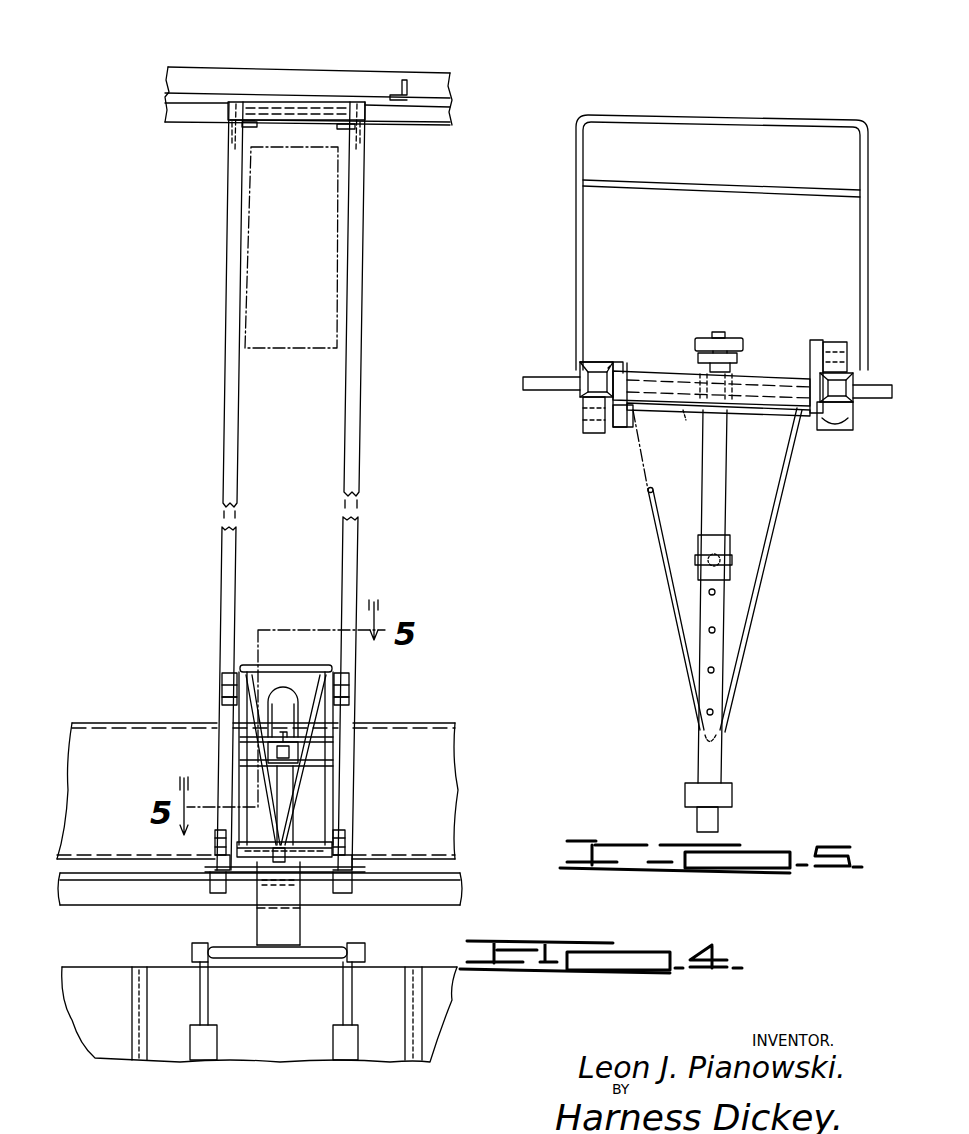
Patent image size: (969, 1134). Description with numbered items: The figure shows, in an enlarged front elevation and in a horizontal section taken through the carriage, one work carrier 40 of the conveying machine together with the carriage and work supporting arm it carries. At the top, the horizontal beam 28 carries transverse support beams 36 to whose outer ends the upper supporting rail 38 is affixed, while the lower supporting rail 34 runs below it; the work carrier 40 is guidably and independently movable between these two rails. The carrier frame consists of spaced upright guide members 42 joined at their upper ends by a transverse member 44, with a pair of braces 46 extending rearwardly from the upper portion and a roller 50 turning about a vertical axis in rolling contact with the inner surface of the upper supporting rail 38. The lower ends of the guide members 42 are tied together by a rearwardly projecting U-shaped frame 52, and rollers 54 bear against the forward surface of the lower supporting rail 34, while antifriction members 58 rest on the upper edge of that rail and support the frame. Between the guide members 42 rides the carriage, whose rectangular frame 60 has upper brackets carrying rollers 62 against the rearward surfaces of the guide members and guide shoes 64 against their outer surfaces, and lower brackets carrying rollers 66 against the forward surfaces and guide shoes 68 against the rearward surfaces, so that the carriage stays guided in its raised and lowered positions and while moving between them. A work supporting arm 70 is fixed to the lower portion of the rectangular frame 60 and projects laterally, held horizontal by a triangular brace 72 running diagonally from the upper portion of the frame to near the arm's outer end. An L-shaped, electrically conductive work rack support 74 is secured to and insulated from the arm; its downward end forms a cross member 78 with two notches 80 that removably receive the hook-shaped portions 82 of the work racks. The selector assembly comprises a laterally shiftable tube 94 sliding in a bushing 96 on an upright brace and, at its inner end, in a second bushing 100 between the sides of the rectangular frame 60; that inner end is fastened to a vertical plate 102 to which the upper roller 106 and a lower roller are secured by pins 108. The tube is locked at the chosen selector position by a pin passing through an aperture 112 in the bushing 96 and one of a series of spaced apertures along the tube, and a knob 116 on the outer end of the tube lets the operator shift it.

In FIG. 4, the horizontal beam 28 is at (330, 78).
In FIG. 4, the lower supporting rail 34 is at (462, 892).
In FIG. 5, the lower supporting rail 34 is at (557, 352).
In FIG. 4, the transverse support beams 36 is at (408, 90).
In FIG. 4, the upper supporting rail 38 is at (448, 122).
In FIG. 4, the work carrier 40 is at (375, 452).
In FIG. 4, the guide members 42 is at (237, 441).
In FIG. 5, the guide members 42 is at (593, 362).
In FIG. 4, the transverse member 44 is at (287, 118).
In FIG. 4, the braces 46 is at (228, 148).
In FIG. 4, the roller 50 is at (228, 128).
In FIG. 5, the U-shaped frame 52 is at (690, 118).
In FIG. 4, the rollers 54 is at (207, 883).
In FIG. 4, the antifriction members 58 is at (367, 870).
In FIG. 4, the rectangular frame 60 is at (292, 660).
In FIG. 5, the rectangular frame 60 is at (665, 361).
In FIG. 4, the rollers 62 is at (217, 677).
In FIG. 5, the rollers 62 is at (840, 340).
In FIG. 4, the guide shoe 64 is at (227, 687).
In FIG. 5, the guide shoe 64 is at (835, 437).
In FIG. 4, the rollers 66 is at (213, 845).
In FIG. 5, the rollers 66 is at (590, 434).
In FIG. 4, the guide shoes 68 is at (348, 842).
In FIG. 5, the guide shoes 68 is at (620, 366).
In FIG. 4, the work supporting arm 70 is at (290, 850).
In FIG. 5, the work supporting arm 70 is at (712, 822).
In FIG. 4, the triangular brace 72 is at (303, 792).
In FIG. 5, the triangular brace 72 is at (757, 607).
In FIG. 4, the work rack support 74 is at (257, 920).
In FIG. 4, the cross member 78 is at (304, 948).
In FIG. 4, the notches 80 is at (195, 940).
In FIG. 4, the hook-shaped portions 82 is at (333, 962).
In FIG. 5, the laterally shiftable tube 94 is at (727, 475).
In FIG. 5, the bushing 96 is at (727, 555).
In FIG. 4, the second bushing 100 is at (300, 751).
In FIG. 5, the second bushing 100 is at (690, 412).
In FIG. 5, the plate 102 is at (737, 360).
In FIG. 5, the upper roller 106 is at (737, 338).
In FIG. 5, the pins 108 is at (718, 333).
In FIG. 5, the aperture 112 is at (693, 555).
In FIG. 5, the knob 116 is at (723, 793).